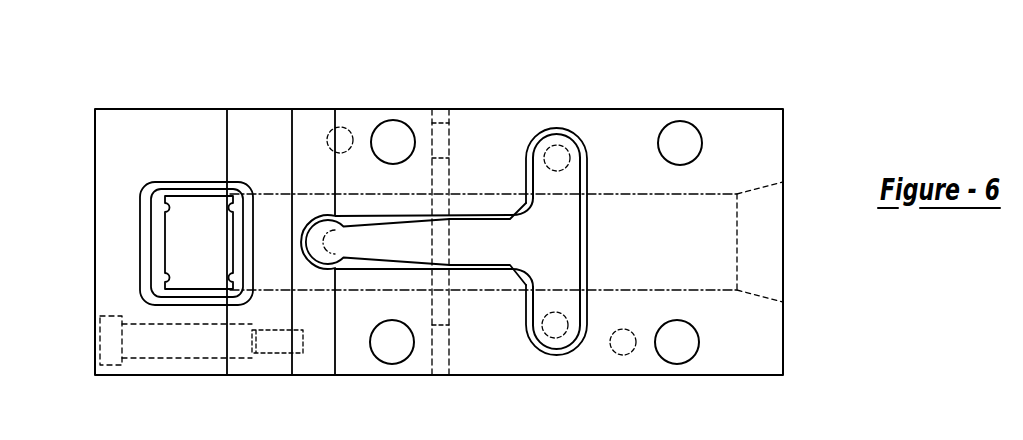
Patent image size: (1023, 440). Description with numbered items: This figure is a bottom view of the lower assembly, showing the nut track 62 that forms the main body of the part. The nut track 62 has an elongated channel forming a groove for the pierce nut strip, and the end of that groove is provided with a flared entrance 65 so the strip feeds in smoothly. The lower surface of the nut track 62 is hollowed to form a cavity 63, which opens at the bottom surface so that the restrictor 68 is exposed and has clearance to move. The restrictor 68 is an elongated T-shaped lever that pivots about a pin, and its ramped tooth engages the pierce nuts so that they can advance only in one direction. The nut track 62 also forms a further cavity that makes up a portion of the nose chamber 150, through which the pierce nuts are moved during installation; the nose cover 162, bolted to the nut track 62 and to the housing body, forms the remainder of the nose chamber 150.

The nut track 62 is at (783, 133).
The nose cover 162 is at (167, 108).
The nose chamber 150 is at (160, 242).
The cavity 63 is at (372, 218).
The restrictor 68 is at (583, 175).
The flared entrance 65 is at (758, 298).